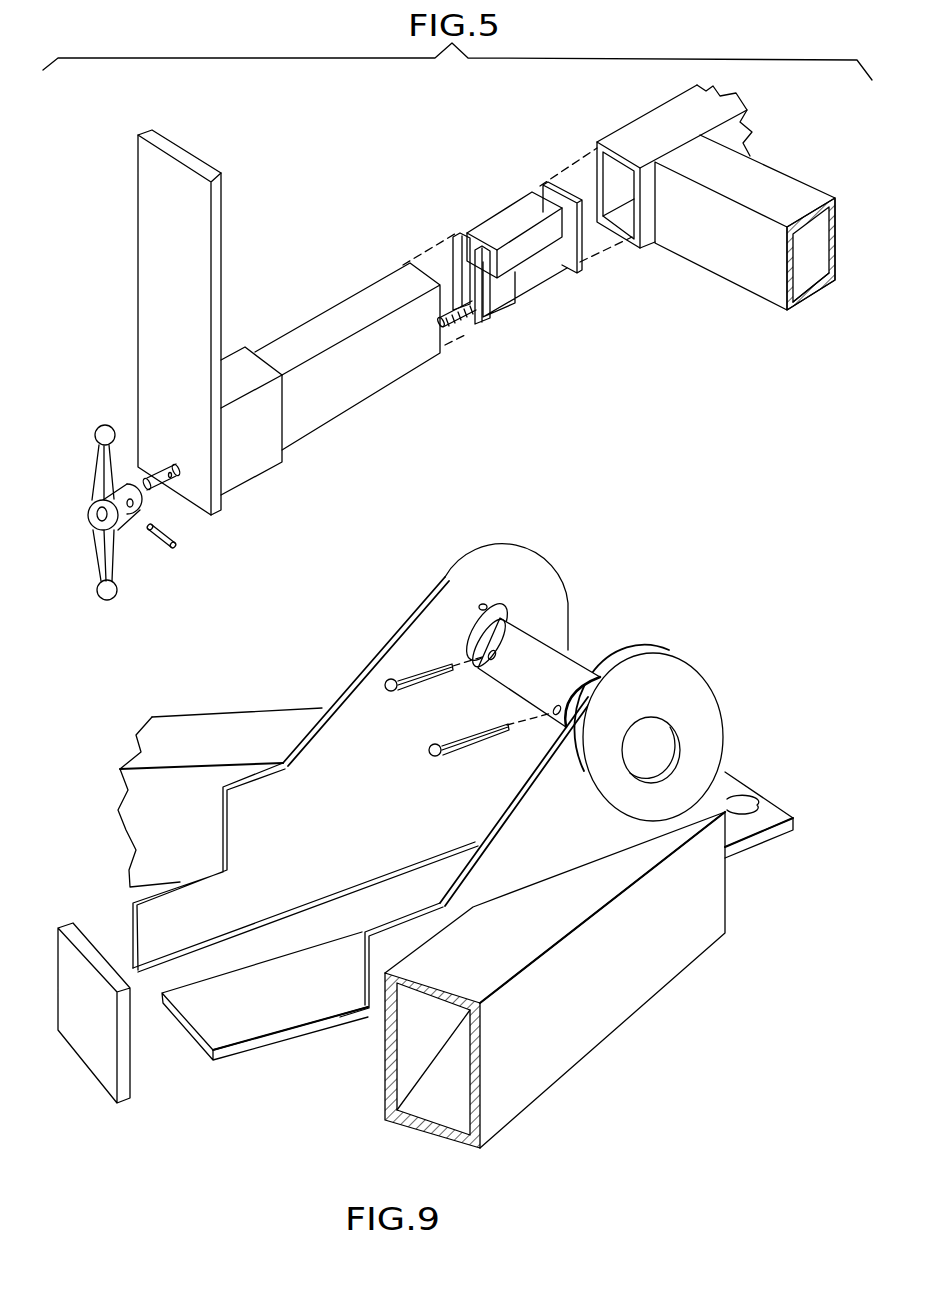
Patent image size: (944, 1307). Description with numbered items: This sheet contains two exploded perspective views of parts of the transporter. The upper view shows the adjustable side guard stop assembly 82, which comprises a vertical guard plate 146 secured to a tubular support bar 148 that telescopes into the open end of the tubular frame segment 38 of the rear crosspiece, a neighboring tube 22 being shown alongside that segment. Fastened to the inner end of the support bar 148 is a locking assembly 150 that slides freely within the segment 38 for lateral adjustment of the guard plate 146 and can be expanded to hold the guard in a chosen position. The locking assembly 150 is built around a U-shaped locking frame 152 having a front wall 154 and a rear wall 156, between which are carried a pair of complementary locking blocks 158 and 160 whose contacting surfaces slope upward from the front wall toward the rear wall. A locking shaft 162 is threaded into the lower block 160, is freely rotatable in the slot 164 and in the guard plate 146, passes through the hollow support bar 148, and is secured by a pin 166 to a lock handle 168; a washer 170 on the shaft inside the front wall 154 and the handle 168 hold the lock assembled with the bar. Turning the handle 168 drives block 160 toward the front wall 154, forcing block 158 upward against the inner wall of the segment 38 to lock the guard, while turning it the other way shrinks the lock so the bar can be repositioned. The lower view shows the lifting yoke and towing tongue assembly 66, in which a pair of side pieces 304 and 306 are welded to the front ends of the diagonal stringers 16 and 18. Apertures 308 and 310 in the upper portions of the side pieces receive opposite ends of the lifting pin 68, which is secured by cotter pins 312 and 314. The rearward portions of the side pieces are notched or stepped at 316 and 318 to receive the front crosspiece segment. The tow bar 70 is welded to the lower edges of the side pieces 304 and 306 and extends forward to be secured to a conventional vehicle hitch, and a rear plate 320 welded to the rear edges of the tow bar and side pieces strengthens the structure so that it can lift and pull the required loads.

In FIG. 5, the side guard stop assembly 82 is at (359, 170).
In FIG. 5, the vertical guard plate 146 is at (148, 250).
In FIG. 5, the tubular support bar 148 is at (312, 330).
In FIG. 5, the front wall 154 is at (464, 235).
In FIG. 5, the slot 164 is at (470, 270).
In FIG. 5, the rear wall 156 is at (554, 183).
In FIG. 5, the locking block 158 is at (499, 215).
In FIG. 5, the locking block 160 is at (552, 260).
In FIG. 5, the U-shaped locking frame 152 is at (545, 292).
In FIG. 5, the locking assembly 150 is at (526, 310).
In FIG. 5, the washer 170 is at (479, 301).
In FIG. 5, the tubular frame segment 38 is at (623, 127).
In FIG. 5, the tongue tube 22 is at (789, 184).
In FIG. 5, the locking shaft 162 is at (172, 462).
In FIG. 5, the pin 166 is at (176, 545).
In FIG. 5, the lock handle 168 is at (113, 558).
In FIG. 9, the lifting yoke and towing tongue assembly 66 is at (660, 588).
In FIG. 9, the diagonal stringer 16 is at (212, 731).
In FIG. 9, the side piece 304 is at (378, 649).
In FIG. 9, the side piece 306 is at (487, 838).
In FIG. 9, the aperture 308 is at (493, 604).
In FIG. 9, the lifting pin 68 is at (562, 663).
In FIG. 9, the aperture 310 is at (680, 737).
In FIG. 9, the cotter pin 312 is at (420, 676).
In FIG. 9, the cotter pin 314 is at (483, 733).
In FIG. 9, the notch 316 is at (222, 845).
In FIG. 9, the notch 318 is at (360, 973).
In FIG. 9, the rear plate 320 is at (97, 957).
In FIG. 9, the diagonal stringer 18 is at (588, 1018).
In FIG. 9, the tow bar 70 is at (769, 792).